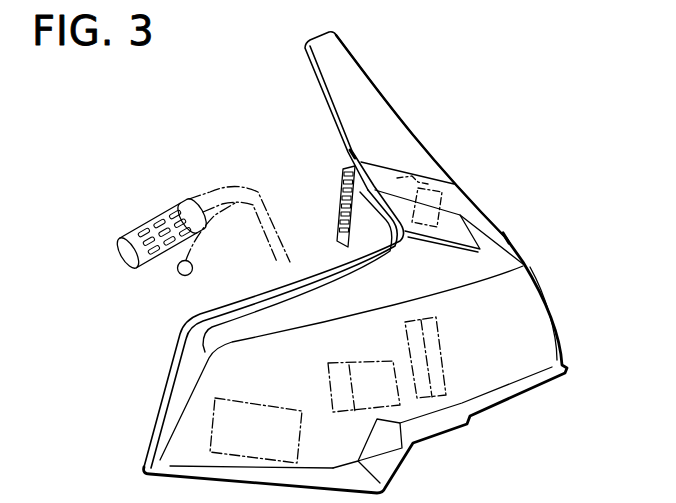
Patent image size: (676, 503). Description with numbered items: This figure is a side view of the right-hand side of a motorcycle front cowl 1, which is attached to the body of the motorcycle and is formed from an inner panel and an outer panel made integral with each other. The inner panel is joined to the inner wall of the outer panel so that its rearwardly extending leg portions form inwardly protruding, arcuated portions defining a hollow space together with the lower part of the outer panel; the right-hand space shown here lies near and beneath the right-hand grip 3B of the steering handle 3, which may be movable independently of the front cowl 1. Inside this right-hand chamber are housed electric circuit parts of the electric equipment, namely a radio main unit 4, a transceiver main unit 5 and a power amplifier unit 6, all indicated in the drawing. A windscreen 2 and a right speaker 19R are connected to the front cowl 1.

The front cowl 1 is at (531, 291).
The windscreen 2 is at (372, 102).
The arm 3 is at (272, 201).
The right-hand grip 3B is at (122, 264).
The right speaker 19R is at (340, 187).
The radio main unit 4 is at (213, 423).
The transceiver main unit 5 is at (385, 398).
The power amplifier unit 6 is at (437, 375).